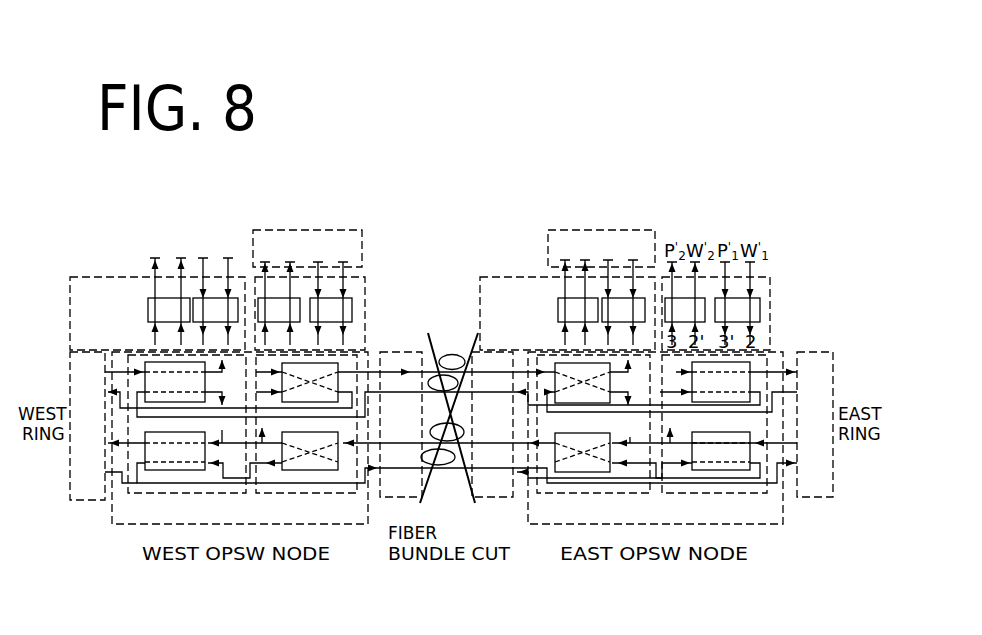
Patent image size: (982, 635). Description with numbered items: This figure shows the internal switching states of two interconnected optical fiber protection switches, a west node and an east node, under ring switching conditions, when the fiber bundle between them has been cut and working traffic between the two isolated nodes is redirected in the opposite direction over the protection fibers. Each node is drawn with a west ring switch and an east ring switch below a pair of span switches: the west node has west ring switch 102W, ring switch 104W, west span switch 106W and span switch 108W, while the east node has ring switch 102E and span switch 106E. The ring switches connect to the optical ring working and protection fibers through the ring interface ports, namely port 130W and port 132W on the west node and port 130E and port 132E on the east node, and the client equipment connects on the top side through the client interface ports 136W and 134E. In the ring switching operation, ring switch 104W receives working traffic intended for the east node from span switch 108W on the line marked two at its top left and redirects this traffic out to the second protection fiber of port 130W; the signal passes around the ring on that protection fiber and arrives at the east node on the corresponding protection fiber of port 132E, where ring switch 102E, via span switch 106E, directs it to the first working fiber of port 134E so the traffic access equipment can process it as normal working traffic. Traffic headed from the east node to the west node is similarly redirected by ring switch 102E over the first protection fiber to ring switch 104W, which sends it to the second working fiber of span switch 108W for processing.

The west ring switch 102W is at (110, 502).
The west ring switch of east OPSW 102E is at (528, 505).
The east ring switch of west OPSW 104W is at (313, 493).
The west span switch 106W is at (100, 277).
The west span switch of east OPSW 106E is at (508, 277).
The east span switch of west OPSW 108W is at (362, 295).
The west ring interface port 130W is at (70, 356).
The west ring interface port of east OPSW 130E is at (472, 352).
The east ring interface port of west OPSW 132W is at (380, 497).
The east ring interface port of east OPSW 132E is at (815, 352).
The west client equipment interface port of east OPSW 134E is at (614, 230).
The east client equipment interface port of west OPSW 136W is at (343, 230).